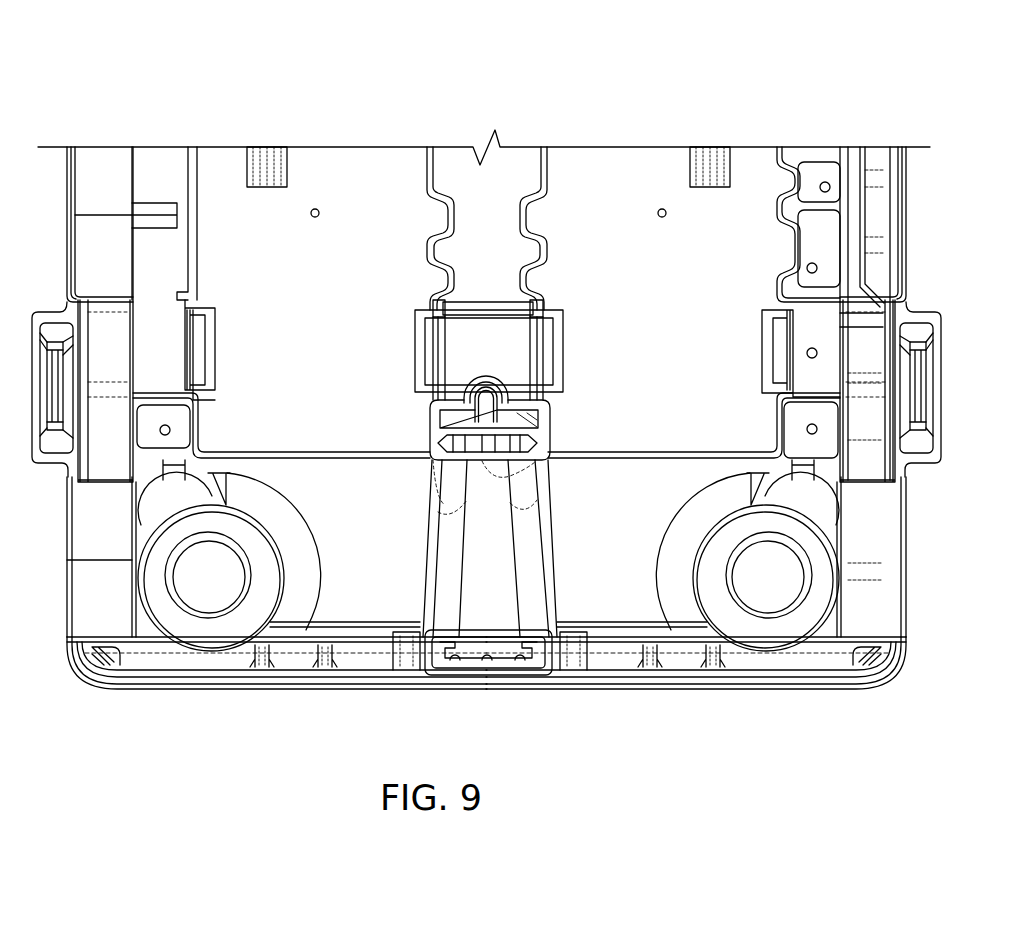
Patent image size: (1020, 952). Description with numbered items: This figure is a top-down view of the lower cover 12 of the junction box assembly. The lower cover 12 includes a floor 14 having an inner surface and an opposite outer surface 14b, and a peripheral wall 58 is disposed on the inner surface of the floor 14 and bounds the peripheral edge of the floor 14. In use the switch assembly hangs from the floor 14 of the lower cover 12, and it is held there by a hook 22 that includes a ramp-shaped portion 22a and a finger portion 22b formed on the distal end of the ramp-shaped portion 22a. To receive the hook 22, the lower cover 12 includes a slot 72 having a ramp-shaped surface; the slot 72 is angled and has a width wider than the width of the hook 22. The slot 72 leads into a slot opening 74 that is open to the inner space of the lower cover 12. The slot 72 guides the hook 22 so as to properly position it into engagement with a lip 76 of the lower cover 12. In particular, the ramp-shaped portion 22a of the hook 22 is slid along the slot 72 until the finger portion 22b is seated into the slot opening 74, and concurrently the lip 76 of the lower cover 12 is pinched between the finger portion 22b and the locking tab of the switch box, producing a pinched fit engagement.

The lower cover 12 is at (647, 73).
The floor 14 is at (358, 176).
The outer surface 14b is at (333, 281).
The peripheral wall 58 is at (905, 195).
The hook 22 is at (471, 380).
The finger portion 22b is at (508, 378).
The lip 76 is at (540, 441).
The ramp-shaped portion 22a is at (535, 462).
The slot opening 74 is at (457, 482).
The slot 72 is at (551, 595).